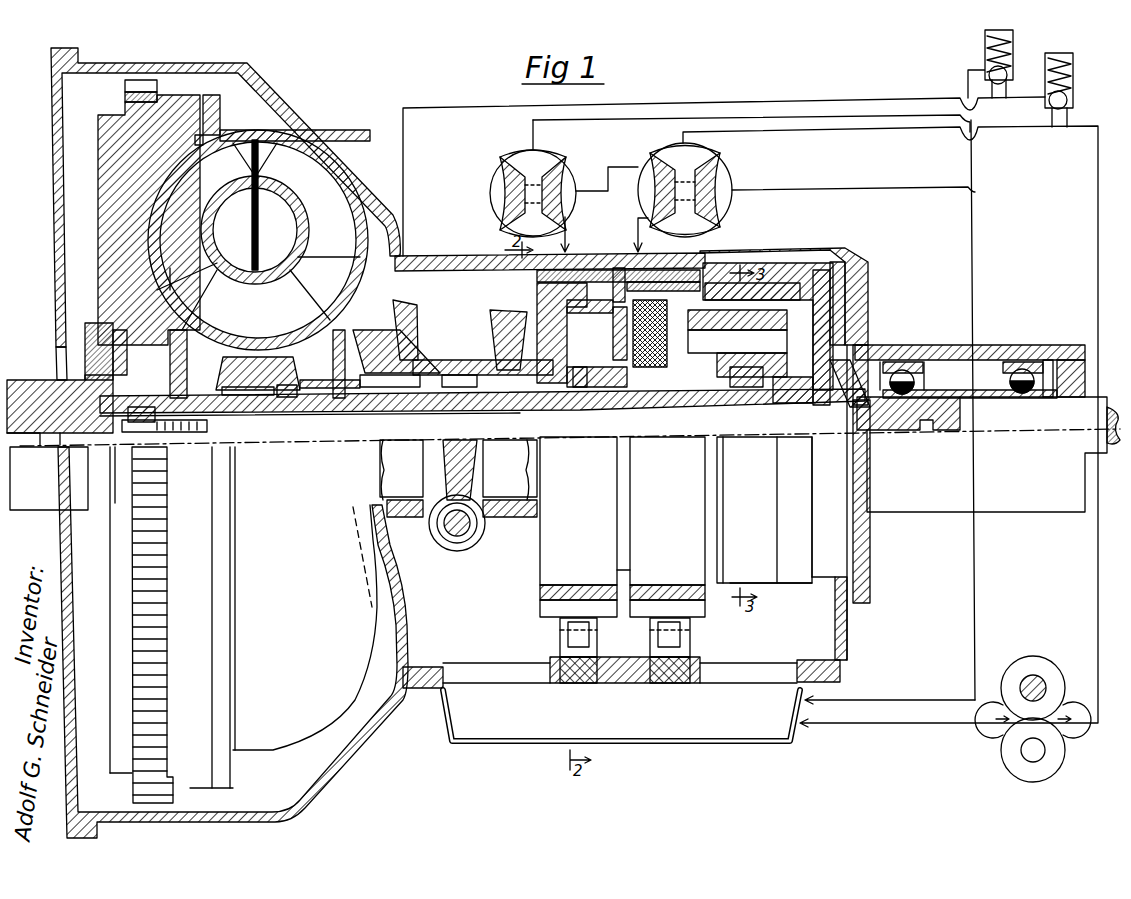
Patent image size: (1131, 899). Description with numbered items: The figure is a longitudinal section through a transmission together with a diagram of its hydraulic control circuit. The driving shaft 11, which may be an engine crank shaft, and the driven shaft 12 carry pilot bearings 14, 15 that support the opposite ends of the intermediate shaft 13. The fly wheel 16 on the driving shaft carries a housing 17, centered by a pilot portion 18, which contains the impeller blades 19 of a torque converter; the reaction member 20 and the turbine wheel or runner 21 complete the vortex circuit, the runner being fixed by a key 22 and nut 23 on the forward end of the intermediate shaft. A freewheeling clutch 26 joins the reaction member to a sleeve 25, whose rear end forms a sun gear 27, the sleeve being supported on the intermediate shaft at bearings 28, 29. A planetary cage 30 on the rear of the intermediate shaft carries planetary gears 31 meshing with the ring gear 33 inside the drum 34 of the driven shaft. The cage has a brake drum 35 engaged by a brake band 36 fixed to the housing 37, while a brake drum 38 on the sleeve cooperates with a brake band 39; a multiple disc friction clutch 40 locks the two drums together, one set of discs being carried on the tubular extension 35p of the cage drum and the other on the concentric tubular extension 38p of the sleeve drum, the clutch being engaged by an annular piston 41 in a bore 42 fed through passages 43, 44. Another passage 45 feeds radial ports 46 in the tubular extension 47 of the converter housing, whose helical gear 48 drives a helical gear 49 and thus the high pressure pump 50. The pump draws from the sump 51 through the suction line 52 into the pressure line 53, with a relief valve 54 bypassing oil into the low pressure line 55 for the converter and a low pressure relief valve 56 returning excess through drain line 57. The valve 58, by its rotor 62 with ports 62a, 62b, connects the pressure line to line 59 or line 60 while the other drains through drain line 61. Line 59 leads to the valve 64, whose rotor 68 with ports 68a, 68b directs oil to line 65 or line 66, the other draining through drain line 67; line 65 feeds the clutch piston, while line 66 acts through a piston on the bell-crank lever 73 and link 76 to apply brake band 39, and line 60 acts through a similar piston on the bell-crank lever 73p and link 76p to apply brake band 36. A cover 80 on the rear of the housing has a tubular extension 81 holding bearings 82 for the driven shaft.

The driving shaft 11 is at (30, 380).
The driven shaft 12 is at (1075, 418).
The intermediate shaft 13 is at (570, 432).
The pilot bearing 14 is at (80, 447).
The pilot bearing 15 is at (900, 415).
The fly wheel 16 is at (105, 228).
The housing 17 is at (247, 140).
The pilot portion 18 is at (198, 120).
The impeller blades 19 is at (312, 180).
The reaction member 20 is at (292, 290).
The turbine wheel or runner 21 is at (187, 284).
The key 22 is at (164, 431).
The nut 23 is at (148, 407).
The sleeve 25 is at (318, 408).
The freewheeling clutch 26 is at (290, 383).
The sun gear 27 is at (742, 412).
The bearing support 28 is at (255, 410).
The bearing support 29 is at (705, 398).
The planetary cage 30 is at (798, 385).
The planetary gears 31 is at (780, 300).
The ring gear 33 is at (740, 265).
The drum 34 is at (838, 330).
The brake drum 35 is at (690, 300).
The tubular extension 35p is at (665, 395).
The brake band 36 is at (650, 270).
The housing 37 is at (785, 252).
The brake drum 38 is at (537, 300).
The tubular extension 38p is at (737, 343).
The brake band 39 is at (605, 300).
The multiple disc friction clutch 40 is at (648, 370).
The annular piston 41 is at (600, 390).
The annular bore 42 is at (590, 253).
The passage 43 is at (530, 412).
The passage 44 is at (500, 310).
The passage 45 is at (418, 280).
The radial ports 46 is at (395, 390).
The tubular extension 47 is at (370, 395).
The helical gear 48 is at (455, 360).
The helical gear 49 is at (475, 545).
The high pressure pump 50 is at (1035, 658).
The sump 51 is at (740, 733).
The suction line 52 is at (868, 723).
The pressure line 53 is at (910, 127).
The relief valve 54 is at (1066, 96).
The low pressure line 55 is at (850, 100).
The low pressure relief valve 56 is at (1005, 70).
The drain line 57 is at (975, 262).
The valve 58 is at (742, 176).
The line 59 is at (609, 167).
The line 60 is at (635, 225).
The drain line 61 is at (822, 190).
The rotor 62 is at (745, 165).
The port 62a is at (725, 183).
The port 62b is at (705, 172).
The valve 64 is at (487, 177).
The line 65 is at (537, 247).
The line 66 is at (565, 230).
The drain line 67 is at (560, 120).
The rotor 68 is at (503, 165).
The port 68a is at (510, 190).
The port 68b is at (512, 210).
The bell-crank lever 73 is at (580, 683).
The bell-crank lever 73p is at (668, 683).
The link 76 is at (560, 636).
The link 76p is at (690, 636).
The cover 80 is at (870, 285).
The tubular extension 81 is at (1003, 350).
The bearings 82 is at (910, 355).